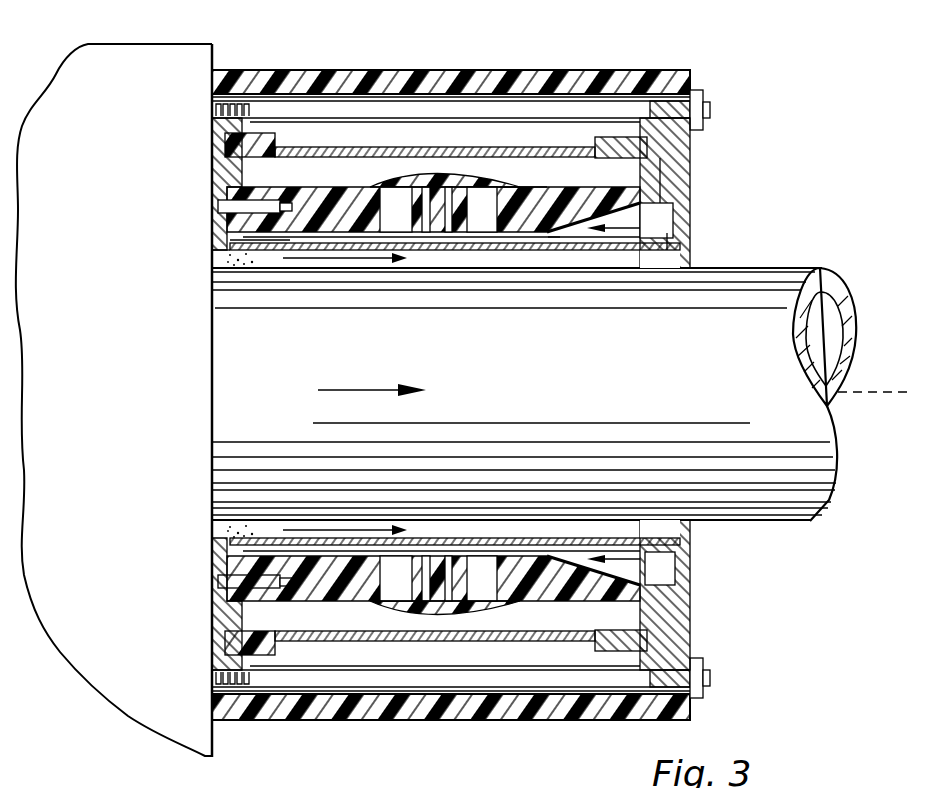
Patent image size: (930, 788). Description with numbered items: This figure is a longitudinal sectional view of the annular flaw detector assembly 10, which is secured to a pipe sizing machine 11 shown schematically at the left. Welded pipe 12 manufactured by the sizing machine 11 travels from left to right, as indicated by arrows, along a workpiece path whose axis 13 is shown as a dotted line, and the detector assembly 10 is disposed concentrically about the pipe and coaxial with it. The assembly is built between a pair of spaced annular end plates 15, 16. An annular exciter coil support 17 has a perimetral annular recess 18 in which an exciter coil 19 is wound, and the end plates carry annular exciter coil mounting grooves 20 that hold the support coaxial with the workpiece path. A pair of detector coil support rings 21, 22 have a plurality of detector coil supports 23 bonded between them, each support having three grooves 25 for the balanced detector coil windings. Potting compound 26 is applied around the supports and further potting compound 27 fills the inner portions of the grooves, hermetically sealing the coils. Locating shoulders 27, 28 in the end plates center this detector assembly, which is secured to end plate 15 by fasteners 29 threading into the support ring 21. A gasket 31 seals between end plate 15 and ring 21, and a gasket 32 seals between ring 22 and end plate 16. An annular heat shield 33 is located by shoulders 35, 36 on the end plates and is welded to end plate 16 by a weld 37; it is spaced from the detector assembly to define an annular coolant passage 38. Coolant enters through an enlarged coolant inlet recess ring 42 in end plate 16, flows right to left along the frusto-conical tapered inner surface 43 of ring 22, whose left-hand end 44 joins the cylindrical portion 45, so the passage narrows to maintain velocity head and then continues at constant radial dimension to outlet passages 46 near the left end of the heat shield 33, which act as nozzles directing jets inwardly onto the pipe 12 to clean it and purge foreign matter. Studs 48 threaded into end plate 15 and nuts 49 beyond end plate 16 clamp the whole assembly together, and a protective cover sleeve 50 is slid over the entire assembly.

The flaw detector assembly 10 is at (712, 194).
The pipe sizing machine 11 is at (128, 40).
The welded pipe 12 is at (790, 278).
The workpiece path axis 13 is at (853, 392).
The end plate 15 is at (228, 170).
The end plate 16 is at (672, 147).
The exciter coil support 17 is at (670, 645).
The perimetral annular recess 18 is at (603, 648).
The exciter coil 19 is at (228, 137).
The exciter coil mounting grooves 20 is at (647, 167).
The detector coil support ring 21 is at (316, 205).
The detector coil support ring 22 is at (548, 197).
The detector coil supports 23 is at (480, 203).
The grooves 25 is at (458, 213).
The potting compound 26 is at (442, 187).
The potting compound 27 is at (236, 206).
The detector assembly locating shoulder 28 is at (680, 217).
The fasteners 29 is at (234, 239).
The gasket 31 is at (230, 568).
The gasket 32 is at (650, 587).
The heat shield 33 is at (510, 545).
The heat shield locating shoulder 35 is at (210, 277).
The heat shield locating shoulder 36 is at (687, 258).
The weld 37 is at (675, 553).
The annular coolant passage 38 is at (337, 547).
The coolant inlet recess ring 42 is at (667, 233).
The tapered inner surface portion 43 is at (613, 214).
The left-hand end 44 is at (548, 237).
The cylindrical portion 45 is at (522, 232).
The outlet passages 46 is at (267, 258).
The studs 48 is at (432, 105).
The nuts 49 is at (695, 90).
The protective cover sleeve 50 is at (315, 70).